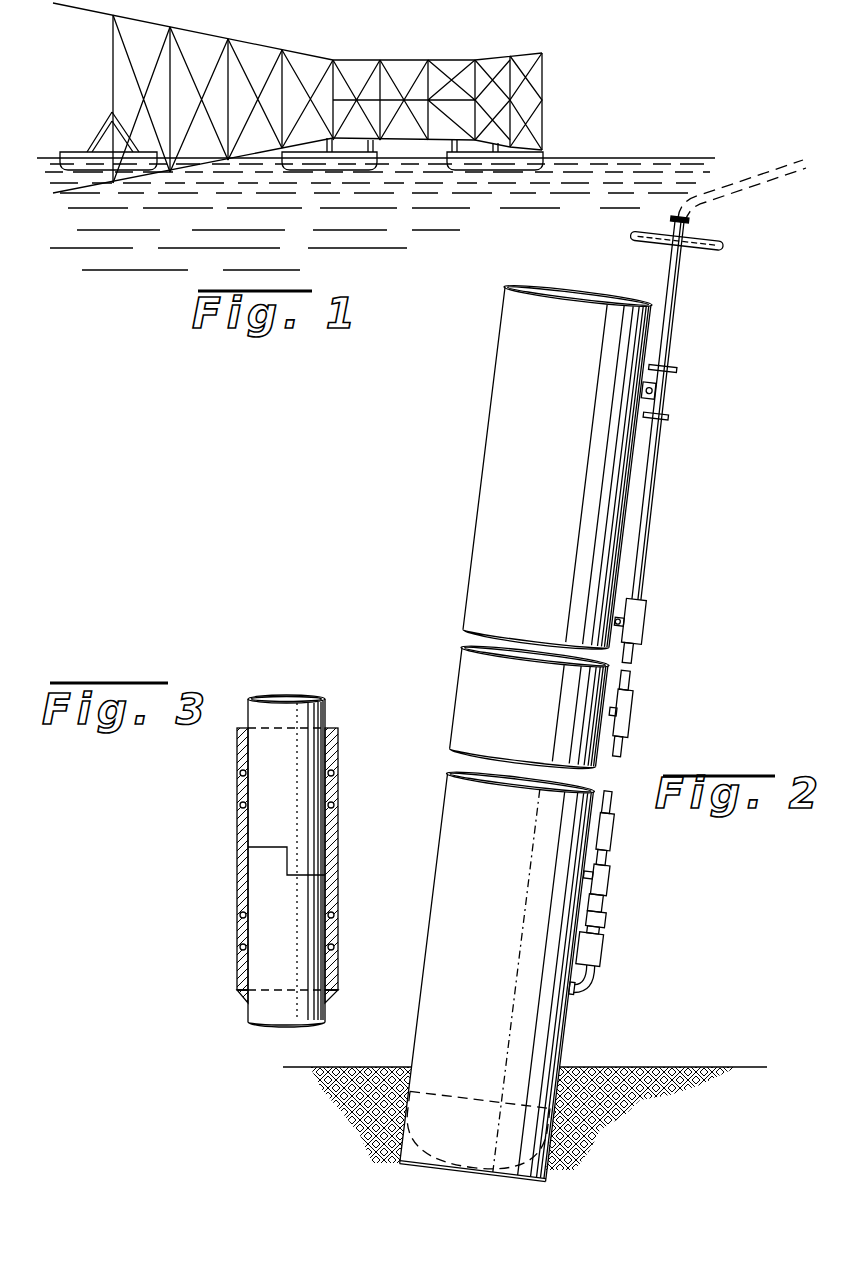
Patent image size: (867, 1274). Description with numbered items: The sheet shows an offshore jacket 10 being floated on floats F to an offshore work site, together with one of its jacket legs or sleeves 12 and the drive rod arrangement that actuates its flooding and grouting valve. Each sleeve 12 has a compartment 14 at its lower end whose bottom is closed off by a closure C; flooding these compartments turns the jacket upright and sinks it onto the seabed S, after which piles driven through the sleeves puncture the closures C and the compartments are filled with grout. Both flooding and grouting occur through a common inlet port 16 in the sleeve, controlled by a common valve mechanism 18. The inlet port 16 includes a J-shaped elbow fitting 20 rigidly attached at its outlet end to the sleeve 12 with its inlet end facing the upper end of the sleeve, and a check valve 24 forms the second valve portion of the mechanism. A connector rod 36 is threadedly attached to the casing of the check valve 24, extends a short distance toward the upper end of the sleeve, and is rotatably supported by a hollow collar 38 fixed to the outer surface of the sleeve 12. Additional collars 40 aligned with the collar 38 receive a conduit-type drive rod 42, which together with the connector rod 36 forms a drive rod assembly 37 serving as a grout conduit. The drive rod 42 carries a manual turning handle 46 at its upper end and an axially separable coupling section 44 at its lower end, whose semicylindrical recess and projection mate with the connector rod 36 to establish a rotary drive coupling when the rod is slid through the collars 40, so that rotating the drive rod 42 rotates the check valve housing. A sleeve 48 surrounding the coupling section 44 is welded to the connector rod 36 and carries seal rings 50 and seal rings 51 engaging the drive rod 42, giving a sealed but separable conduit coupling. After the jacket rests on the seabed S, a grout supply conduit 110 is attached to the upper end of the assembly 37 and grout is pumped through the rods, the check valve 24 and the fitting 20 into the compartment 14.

In FIG. 1, the offshore jacket 10 is at (430, 50).
In FIG. 1, the jacket sleeve 12 is at (254, 41).
In FIG. 2, the jacket sleeve 12 is at (428, 897).
In FIG. 2, the compartment 14 is at (480, 637).
In FIG. 2, the inlet port 16 is at (574, 992).
In FIG. 2, the valve mechanism 18 is at (622, 915).
In FIG. 2, the J-shaped elbow fitting 20 is at (590, 985).
In FIG. 2, the check valve 24 is at (608, 917).
In FIG. 2, the connector rod 36 is at (605, 898).
In FIG. 3, the connector rod 36 is at (262, 1003).
In FIG. 2, the drive rod assembly 37 is at (652, 656).
In FIG. 2, the hollow collar 38 is at (610, 875).
In FIG. 2, the collars 40 is at (675, 395).
In FIG. 2, the drive rod 42 is at (643, 563).
In FIG. 3, the drive rod 42 is at (328, 706).
In FIG. 3, the coupling section 44 is at (270, 865).
In FIG. 2, the manual turning handle 46 is at (720, 243).
In FIG. 2, the sleeve 48 is at (600, 835).
In FIG. 3, the sleeve 48 is at (338, 860).
In FIG. 3, the seal rings 50 is at (240, 917).
In FIG. 3, the seal rings 51 is at (240, 774).
In FIG. 2, the grout supply conduit 110 is at (752, 176).
In FIG. 1, the floats F is at (546, 156).
In FIG. 2, the seabed S is at (687, 1066).
In FIG. 2, the closures C is at (400, 1147).